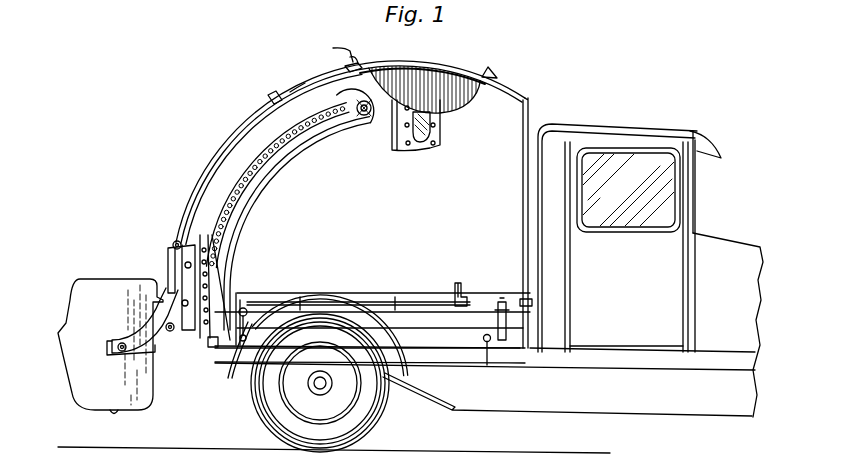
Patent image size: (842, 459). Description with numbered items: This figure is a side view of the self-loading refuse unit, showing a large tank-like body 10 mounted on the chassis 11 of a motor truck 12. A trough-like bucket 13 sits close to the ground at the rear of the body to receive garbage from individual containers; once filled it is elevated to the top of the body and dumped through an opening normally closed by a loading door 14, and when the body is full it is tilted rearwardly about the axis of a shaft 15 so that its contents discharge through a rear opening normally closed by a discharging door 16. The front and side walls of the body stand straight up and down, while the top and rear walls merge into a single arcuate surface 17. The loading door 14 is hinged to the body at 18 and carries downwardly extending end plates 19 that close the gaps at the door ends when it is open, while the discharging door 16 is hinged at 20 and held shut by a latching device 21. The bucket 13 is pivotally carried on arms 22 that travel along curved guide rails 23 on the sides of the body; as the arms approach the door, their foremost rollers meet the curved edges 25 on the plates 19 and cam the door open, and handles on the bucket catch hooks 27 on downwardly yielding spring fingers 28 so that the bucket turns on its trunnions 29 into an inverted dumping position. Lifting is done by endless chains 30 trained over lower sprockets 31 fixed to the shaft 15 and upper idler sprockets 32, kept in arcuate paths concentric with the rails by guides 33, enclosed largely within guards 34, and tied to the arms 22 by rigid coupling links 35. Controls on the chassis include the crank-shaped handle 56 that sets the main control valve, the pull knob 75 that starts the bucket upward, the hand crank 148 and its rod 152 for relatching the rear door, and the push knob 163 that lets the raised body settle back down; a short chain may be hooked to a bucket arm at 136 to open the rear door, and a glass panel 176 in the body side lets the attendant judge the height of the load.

The body 10 is at (511, 104).
The chassis 11 is at (424, 360).
The motor truck 12 is at (739, 248).
The bucket 13 is at (73, 383).
The loading door 14 is at (458, 68).
The shaft 15 is at (220, 356).
The discharging door 16 is at (184, 217).
The arcuate surface 17 is at (297, 88).
The hinge 18 is at (492, 72).
The end closure plates 19 is at (456, 103).
The hinge 20 is at (276, 94).
The latching device 21 is at (158, 297).
The arms 22 is at (164, 345).
The curved guide rails 23 is at (202, 193).
The curved edges 25 is at (416, 135).
The hooks 27 is at (343, 58).
The spring fingers 28 is at (330, 47).
The trunnions 29 is at (122, 355).
The endless chains 30 is at (240, 168).
The lower sprockets 31 is at (233, 307).
The upper sprockets 32 is at (362, 123).
The guides 33 is at (263, 145).
The guards 34 is at (283, 160).
The rigid coupling links 35 is at (210, 261).
The crank-shaped handle 56 is at (503, 301).
The knob 75 is at (253, 312).
The chain hooking point 136 is at (112, 343).
The hand crank 148 is at (458, 282).
The rod 152 is at (382, 297).
The knob 163 is at (487, 345).
The glass panel 176 is at (431, 133).